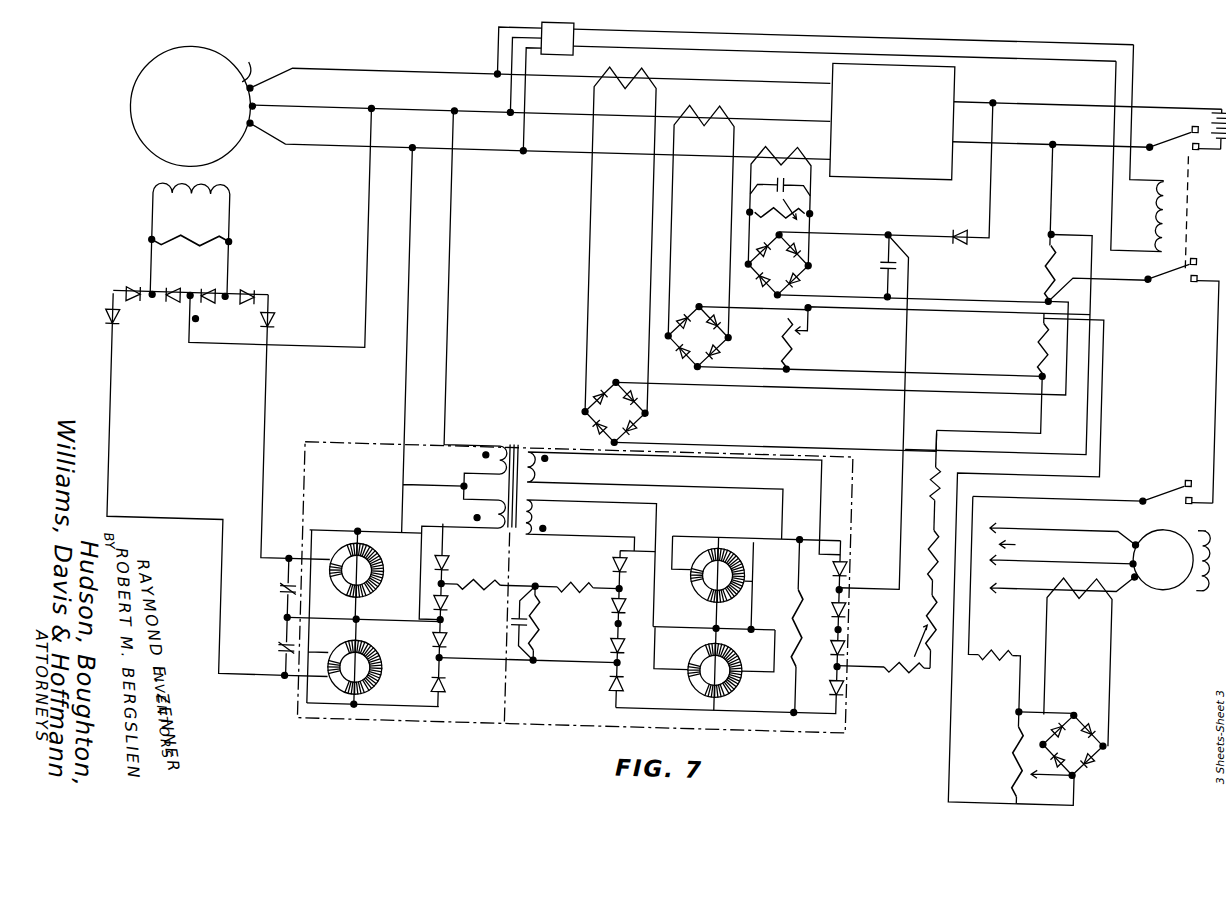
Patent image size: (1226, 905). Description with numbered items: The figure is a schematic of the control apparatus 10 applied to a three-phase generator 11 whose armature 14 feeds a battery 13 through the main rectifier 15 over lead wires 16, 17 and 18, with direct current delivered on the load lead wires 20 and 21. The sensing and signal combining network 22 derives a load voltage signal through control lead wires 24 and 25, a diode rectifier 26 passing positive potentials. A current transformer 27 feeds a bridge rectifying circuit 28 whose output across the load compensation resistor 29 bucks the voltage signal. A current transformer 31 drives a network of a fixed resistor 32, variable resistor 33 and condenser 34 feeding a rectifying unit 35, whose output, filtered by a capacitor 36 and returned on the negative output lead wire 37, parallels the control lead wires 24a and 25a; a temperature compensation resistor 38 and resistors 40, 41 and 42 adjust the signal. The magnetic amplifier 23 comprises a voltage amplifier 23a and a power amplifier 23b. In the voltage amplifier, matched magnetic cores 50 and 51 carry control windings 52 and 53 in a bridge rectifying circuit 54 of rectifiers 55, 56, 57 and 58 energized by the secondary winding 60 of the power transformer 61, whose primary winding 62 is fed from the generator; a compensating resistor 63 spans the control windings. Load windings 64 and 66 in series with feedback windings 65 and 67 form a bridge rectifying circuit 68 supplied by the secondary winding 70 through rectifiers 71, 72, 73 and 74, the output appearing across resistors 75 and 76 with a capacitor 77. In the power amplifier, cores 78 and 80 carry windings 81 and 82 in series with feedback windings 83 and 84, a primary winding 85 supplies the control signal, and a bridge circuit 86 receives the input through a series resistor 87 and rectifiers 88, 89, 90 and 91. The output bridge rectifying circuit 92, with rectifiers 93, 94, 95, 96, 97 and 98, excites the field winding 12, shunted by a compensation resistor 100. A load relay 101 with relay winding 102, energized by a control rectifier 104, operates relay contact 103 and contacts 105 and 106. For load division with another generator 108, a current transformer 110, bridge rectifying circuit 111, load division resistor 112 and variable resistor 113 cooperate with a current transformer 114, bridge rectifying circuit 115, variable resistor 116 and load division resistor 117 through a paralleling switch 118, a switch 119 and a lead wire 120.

The control apparatus 10 is at (520, 242).
The generator 11 is at (192, 117).
The field winding 12 is at (226, 210).
The battery 13 is at (1214, 123).
The armature 14 is at (254, 61).
The main rectifier 15 is at (944, 78).
The lead wire 16 is at (424, 76).
The lead wire 17 is at (425, 115).
The lead wire 18 is at (429, 150).
The positive load lead wire 20 is at (1070, 94).
The negative load lead wire 21 is at (1075, 131).
The sensing and signal combining network 22 is at (869, 327).
The magnetic amplifier 23 is at (856, 484).
The voltage amplifier 23a is at (802, 728).
The power amplifier 23b is at (438, 728).
The positive control lead wire 24 is at (985, 191).
The positive control lead wire 24a is at (904, 403).
The negative control lead wire 25 is at (1048, 190).
The negative control lead wire 25a is at (936, 446).
The diode rectifier 26 is at (953, 219).
The current transformer 27 is at (610, 83).
The bridge rectifying circuit 28 is at (759, 415).
The load compensation resistor 29 is at (1037, 262).
The current transformer 31 is at (782, 148).
The fixed resistor 32 is at (742, 198).
The variable resistor 33 is at (805, 196).
The condenser 34 is at (778, 180).
The bridge type rectifying unit 35 is at (787, 259).
The capacitor 36 is at (900, 262).
The negative output lead wire 37 is at (838, 288).
The temperature compensation resistor 38 is at (872, 652).
The resistor 40 is at (934, 488).
The resistor 41 is at (937, 602).
The resistor 42 is at (929, 612).
The magnetic core 50 is at (740, 545).
The magnetic core 51 is at (742, 645).
The control winding 52 is at (748, 568).
The control winding 53 is at (750, 656).
The bridge rectifying circuit 54 is at (871, 621).
The rectifier 55 is at (852, 560).
The rectifier 56 is at (850, 601).
The rectifier 57 is at (851, 641).
The rectifier 58 is at (851, 683).
The secondary winding 60 is at (554, 466).
The power transformer 61 is at (515, 448).
The primary winding 62 is at (488, 450).
The compensating resistor 63 is at (754, 623).
The load winding 64 is at (719, 540).
The feedback winding 65 is at (686, 655).
The load winding 66 is at (736, 712).
The feedback winding 67 is at (696, 543).
The bridge rectifying circuit 68 is at (620, 624).
The secondary winding 70 is at (550, 510).
The rectifier 71 is at (616, 605).
The rectifier 72 is at (616, 646).
The rectifier 73 is at (618, 684).
The rectifier 74 is at (618, 566).
The resistor 75 is at (580, 578).
The resistor 76 is at (566, 623).
The capacitor 77 is at (523, 634).
The magnetic core 78 is at (348, 556).
The magnetic core 80 is at (356, 696).
The winding 81 is at (378, 593).
The winding 82 is at (388, 667).
The feedback winding 83 is at (330, 660).
The feedback winding 84 is at (330, 594).
The primary winding 85 is at (491, 543).
The bridge circuit 86 is at (384, 615).
The series resistor 87 is at (490, 588).
The rectifier 88 is at (452, 564).
The rectifier 89 is at (452, 604).
The rectifier 90 is at (452, 646).
The rectifier 91 is at (452, 688).
The output bridge rectifying circuit 92 is at (262, 225).
The rectifier 93 is at (185, 482).
The rectifier 94 is at (126, 298).
The rectifier 95 is at (243, 298).
The rectifier 96 is at (272, 327).
The rectifier 97 is at (174, 297).
The rectifier 98 is at (211, 296).
The compensation resistor 100 is at (168, 248).
The load relay 101 is at (1149, 113).
The relay winding 102 is at (1148, 200).
The relay contact 103 is at (1162, 124).
The control rectifier 104 is at (546, 56).
The relay contact 105 is at (282, 594).
The relay contact 106 is at (278, 662).
The generator 108 is at (1099, 571).
The current transformer 110 is at (693, 110).
The bridge rectifying circuit 111 is at (877, 341).
The load division resistor 112 is at (1034, 332).
The variable resistor 113 is at (792, 342).
The current transformer 114 is at (1063, 570).
The bridge rectifying circuit 115 is at (1062, 745).
The variable resistor 116 is at (1020, 740).
The load division resistor 117 is at (1010, 642).
The paralleling switch 118 is at (1166, 474).
The switch 119 is at (1156, 271).
The lead wire 120 is at (1100, 401).